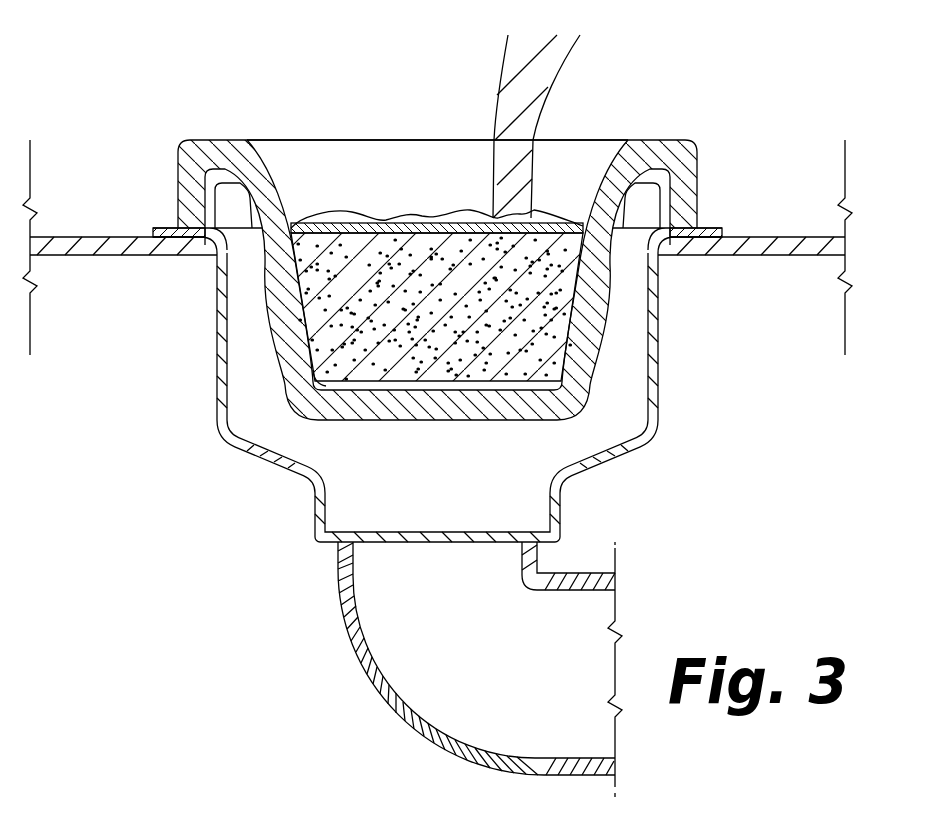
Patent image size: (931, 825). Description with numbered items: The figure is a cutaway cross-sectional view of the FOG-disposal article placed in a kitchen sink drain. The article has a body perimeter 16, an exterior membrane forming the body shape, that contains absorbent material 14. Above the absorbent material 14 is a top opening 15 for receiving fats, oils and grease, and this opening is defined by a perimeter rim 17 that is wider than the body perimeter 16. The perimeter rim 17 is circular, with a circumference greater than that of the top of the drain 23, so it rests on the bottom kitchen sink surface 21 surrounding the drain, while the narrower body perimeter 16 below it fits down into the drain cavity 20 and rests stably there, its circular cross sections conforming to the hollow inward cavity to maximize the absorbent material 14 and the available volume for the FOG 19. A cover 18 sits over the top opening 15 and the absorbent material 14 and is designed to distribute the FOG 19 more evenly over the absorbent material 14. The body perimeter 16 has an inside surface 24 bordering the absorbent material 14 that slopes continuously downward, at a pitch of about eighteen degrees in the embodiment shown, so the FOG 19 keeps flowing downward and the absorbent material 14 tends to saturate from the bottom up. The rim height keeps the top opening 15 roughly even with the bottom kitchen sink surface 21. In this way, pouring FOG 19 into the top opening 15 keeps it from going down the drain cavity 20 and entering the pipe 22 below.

The absorbent material 14 is at (335, 323).
The top opening 15 is at (572, 192).
The body perimeter 16 is at (290, 360).
The perimeter rim 17 is at (232, 150).
The cover 18 is at (387, 216).
The FOG 19 is at (513, 65).
The drain cavity 20 is at (217, 326).
The bottom kitchen sink surface 21 is at (152, 237).
The pipe 22 is at (382, 696).
The top of the drain 23 is at (200, 232).
The inside surface 24 is at (316, 385).